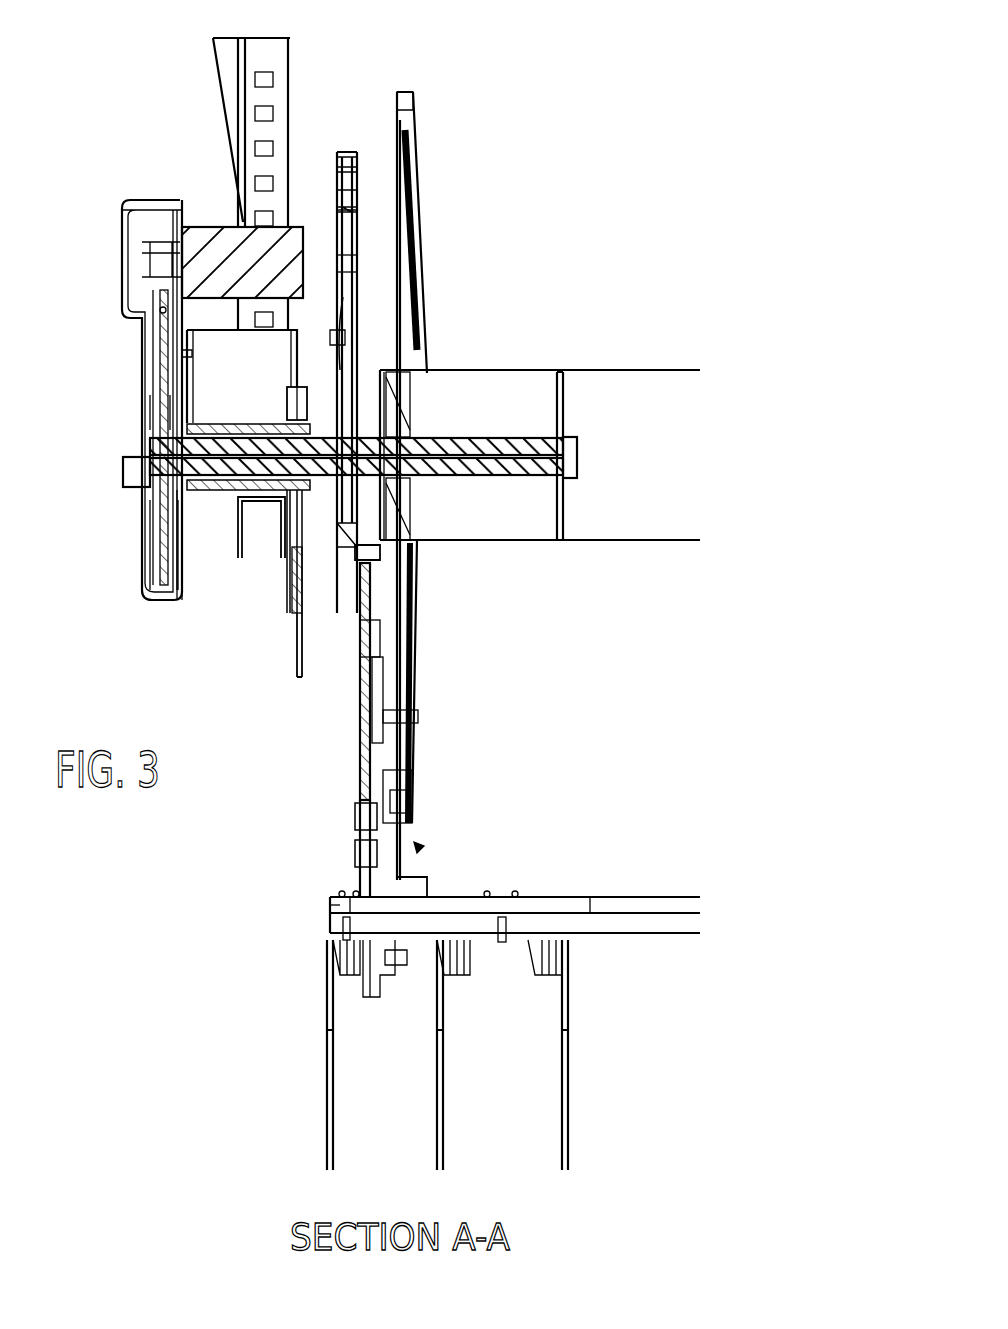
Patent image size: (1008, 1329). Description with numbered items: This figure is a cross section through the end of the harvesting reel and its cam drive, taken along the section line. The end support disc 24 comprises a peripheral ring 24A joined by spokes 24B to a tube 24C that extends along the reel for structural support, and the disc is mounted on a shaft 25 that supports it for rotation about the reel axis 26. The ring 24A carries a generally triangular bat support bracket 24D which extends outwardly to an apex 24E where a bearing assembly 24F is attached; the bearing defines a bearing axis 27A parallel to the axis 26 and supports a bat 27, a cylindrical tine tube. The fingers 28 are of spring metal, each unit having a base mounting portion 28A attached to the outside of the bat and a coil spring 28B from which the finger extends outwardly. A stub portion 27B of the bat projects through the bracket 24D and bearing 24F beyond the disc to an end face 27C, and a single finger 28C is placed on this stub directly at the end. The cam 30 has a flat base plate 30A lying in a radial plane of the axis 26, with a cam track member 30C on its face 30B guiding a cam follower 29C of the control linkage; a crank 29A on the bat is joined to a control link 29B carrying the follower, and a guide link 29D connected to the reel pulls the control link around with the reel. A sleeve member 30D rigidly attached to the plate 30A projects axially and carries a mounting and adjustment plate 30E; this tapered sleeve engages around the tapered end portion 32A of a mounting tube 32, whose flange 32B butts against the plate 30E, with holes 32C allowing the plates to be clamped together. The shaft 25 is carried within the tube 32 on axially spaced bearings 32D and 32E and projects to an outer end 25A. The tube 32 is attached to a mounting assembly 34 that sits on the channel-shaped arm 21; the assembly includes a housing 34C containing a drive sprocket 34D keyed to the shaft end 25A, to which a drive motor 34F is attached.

The arm 21 is at (236, 80).
The end support disc 24 is at (410, 125).
The peripheral ring 24A is at (412, 95).
The spokes 24B is at (415, 280).
The tube 24C is at (632, 370).
The bat support bracket 24D is at (417, 853).
The apex 24E is at (385, 975).
The bearing assembly 24F is at (420, 880).
The shaft 25 is at (485, 470).
The outer end of shaft 25A is at (148, 442).
The axis 26 is at (553, 470).
The bat 27 is at (650, 897).
The bearing axis 27A is at (592, 897).
The stub portion 27B is at (352, 893).
The end face 27C is at (330, 905).
The fingers 28 is at (568, 1020).
The base mounting portion 28A is at (500, 942).
The coil spring 28B is at (565, 962).
The single finger 28C is at (325, 1000).
The crank 29A is at (402, 837).
The control link 29B is at (362, 700).
The cam follower 29C is at (342, 620).
The guide link 29D is at (375, 700).
The cam 30 is at (352, 150).
The base plate 30A is at (343, 257).
The face of base plate 30B is at (340, 273).
The cam track member 30C is at (360, 197).
The sleeve member 30D is at (400, 360).
The mounting and adjustment plate 30E is at (300, 660).
The mounting tube 32 is at (242, 376).
The end portion of tube 32A is at (258, 560).
The flange 32B is at (297, 390).
The holes 32C is at (292, 397).
The bearing 32D is at (203, 500).
The bearing 32E is at (347, 333).
The mounting assembly 34 is at (180, 369).
The housing 34C is at (145, 535).
The drive sprocket 34D is at (160, 412).
The drive motor 34F is at (208, 232).